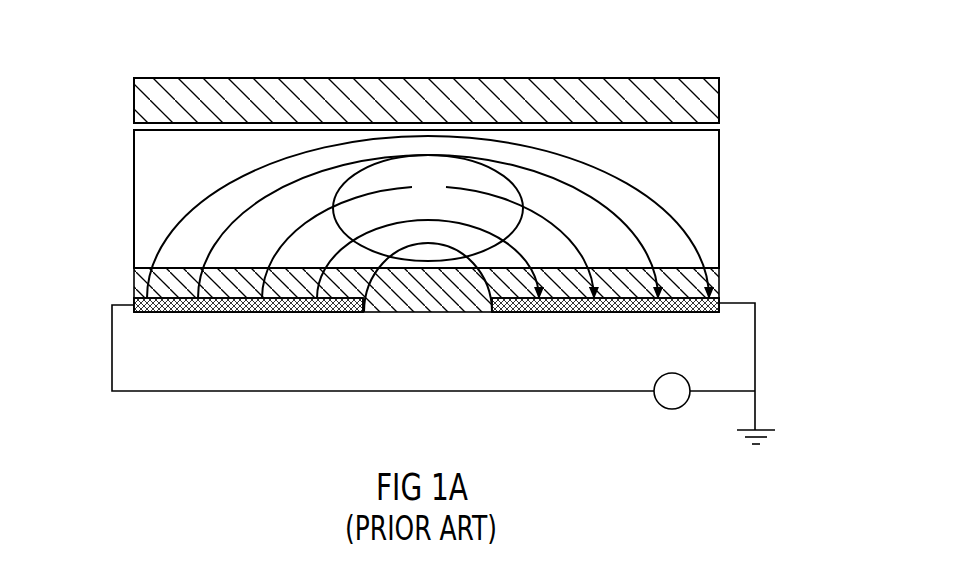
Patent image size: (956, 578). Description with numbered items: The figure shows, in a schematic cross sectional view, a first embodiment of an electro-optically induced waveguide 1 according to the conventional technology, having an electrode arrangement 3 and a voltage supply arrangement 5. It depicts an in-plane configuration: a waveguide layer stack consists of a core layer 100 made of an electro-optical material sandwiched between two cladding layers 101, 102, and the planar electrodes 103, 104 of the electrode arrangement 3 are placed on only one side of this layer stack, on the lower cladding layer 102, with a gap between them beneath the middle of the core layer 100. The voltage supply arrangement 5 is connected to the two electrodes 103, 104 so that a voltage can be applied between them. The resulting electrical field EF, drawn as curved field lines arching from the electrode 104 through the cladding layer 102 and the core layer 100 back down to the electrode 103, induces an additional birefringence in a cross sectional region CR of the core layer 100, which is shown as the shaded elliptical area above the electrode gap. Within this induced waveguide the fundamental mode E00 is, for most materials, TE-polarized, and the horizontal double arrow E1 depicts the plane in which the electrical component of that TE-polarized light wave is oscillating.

The electro-optically induced waveguide 1 is at (106, 69).
The electrode arrangement 3 is at (106, 298).
The voltage supply arrangement 5 is at (768, 414).
The core layer 100 is at (719, 197).
The cladding layer 101 is at (719, 100).
The cladding layer 102 is at (718, 286).
The planar electrode 103 is at (571, 314).
The planar electrode 104 is at (280, 314).
The cross sectional region CR is at (428, 155).
The electrical field EF is at (182, 209).
The plane of oscillation of the electrical component E1 is at (511, 210).
The fundamental mode E00 is at (531, 199).